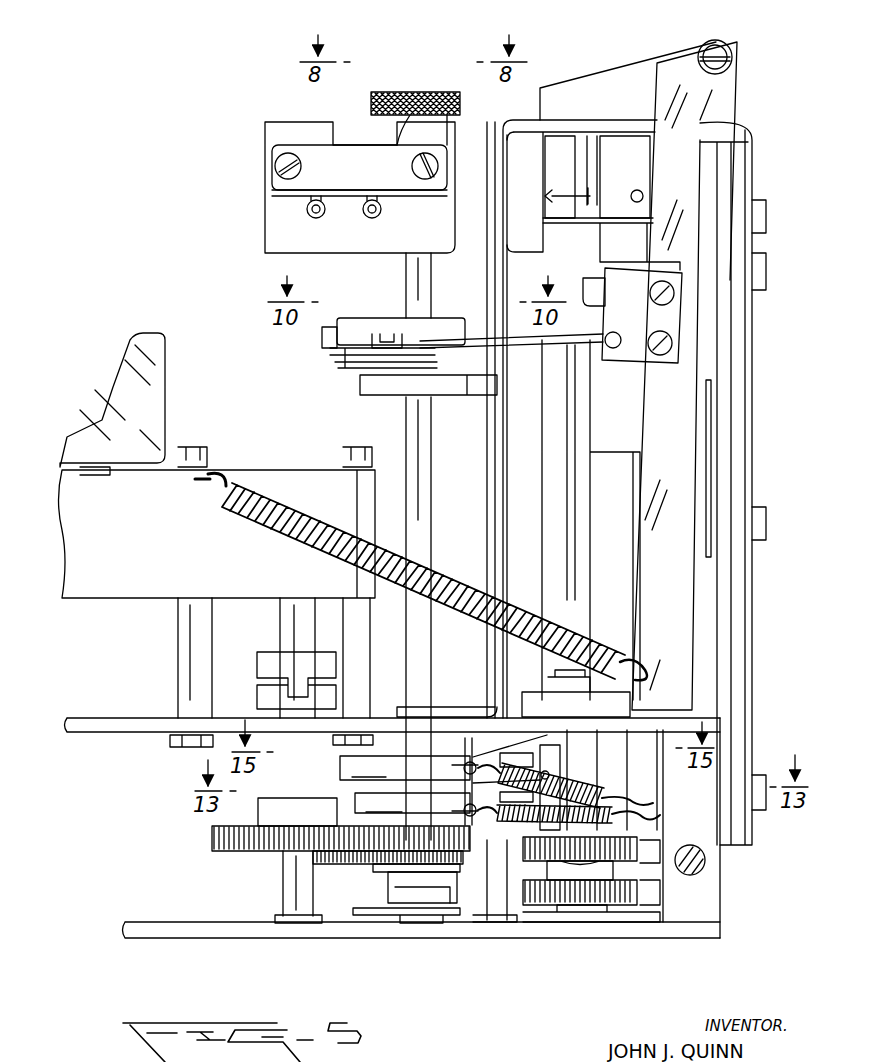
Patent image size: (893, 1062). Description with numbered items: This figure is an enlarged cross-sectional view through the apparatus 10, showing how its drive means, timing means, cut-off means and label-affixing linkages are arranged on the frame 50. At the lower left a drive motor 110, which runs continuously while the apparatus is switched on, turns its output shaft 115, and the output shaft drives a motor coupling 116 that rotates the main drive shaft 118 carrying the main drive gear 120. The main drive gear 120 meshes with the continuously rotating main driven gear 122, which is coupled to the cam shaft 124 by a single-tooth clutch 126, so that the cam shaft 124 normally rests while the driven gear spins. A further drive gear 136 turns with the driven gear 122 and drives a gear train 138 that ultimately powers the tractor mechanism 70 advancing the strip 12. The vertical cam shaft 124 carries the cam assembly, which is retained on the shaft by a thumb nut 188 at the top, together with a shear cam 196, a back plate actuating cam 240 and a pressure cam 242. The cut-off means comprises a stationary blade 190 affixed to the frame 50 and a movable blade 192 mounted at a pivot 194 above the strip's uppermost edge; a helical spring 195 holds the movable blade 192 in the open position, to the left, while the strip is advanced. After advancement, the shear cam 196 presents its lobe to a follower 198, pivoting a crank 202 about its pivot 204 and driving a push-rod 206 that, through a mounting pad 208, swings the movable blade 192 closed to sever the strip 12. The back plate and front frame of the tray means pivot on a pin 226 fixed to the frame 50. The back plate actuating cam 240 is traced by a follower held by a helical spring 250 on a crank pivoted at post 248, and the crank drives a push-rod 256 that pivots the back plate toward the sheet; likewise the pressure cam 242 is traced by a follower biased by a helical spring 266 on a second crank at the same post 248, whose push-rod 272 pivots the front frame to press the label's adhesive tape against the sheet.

The apparatus 10 is at (268, 198).
The strip 12 is at (710, 543).
The frame 50 is at (90, 734).
The tractor mechanism 70 is at (598, 213).
The drive motor 110 is at (158, 428).
The output shaft 115 is at (292, 603).
The motor coupling 116 is at (270, 660).
The main drive shaft 118 is at (296, 923).
The main drive gear 120 is at (211, 840).
The main driven gear 122 is at (412, 840).
The cam shaft 124 is at (412, 424).
The clutch 126 is at (430, 905).
The further drive gear 136 is at (328, 862).
The gear train 138 is at (642, 926).
The thumb nut 188 is at (438, 92).
The stationary blade 190 is at (727, 672).
The movable blade 192 is at (694, 462).
The pivot mounting 194 is at (716, 55).
The helical spring 195 is at (466, 578).
The shear cam 196 is at (390, 326).
The follower 198 is at (323, 338).
The crank 202 is at (346, 368).
The pivot 204 is at (408, 342).
The push-rod 206 is at (480, 338).
The mounting pad 208 is at (630, 355).
The pin 226 is at (708, 858).
The back plate actuating cam 240 is at (412, 803).
The pressure cam 242 is at (405, 768).
The post 248 is at (495, 920).
The helical spring 250 is at (620, 822).
The push-rod 256 is at (552, 768).
The helical spring 266 is at (628, 790).
The push-rod 272 is at (503, 752).